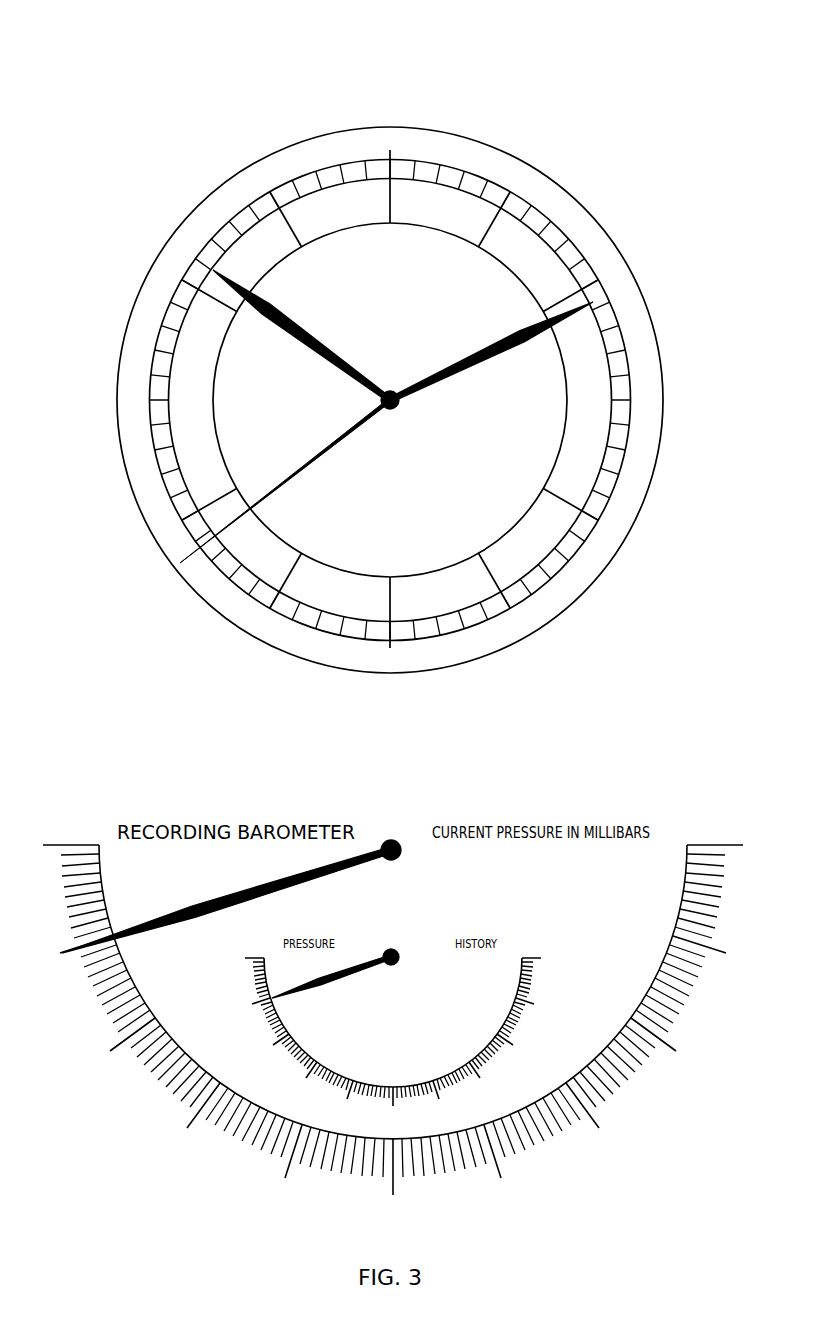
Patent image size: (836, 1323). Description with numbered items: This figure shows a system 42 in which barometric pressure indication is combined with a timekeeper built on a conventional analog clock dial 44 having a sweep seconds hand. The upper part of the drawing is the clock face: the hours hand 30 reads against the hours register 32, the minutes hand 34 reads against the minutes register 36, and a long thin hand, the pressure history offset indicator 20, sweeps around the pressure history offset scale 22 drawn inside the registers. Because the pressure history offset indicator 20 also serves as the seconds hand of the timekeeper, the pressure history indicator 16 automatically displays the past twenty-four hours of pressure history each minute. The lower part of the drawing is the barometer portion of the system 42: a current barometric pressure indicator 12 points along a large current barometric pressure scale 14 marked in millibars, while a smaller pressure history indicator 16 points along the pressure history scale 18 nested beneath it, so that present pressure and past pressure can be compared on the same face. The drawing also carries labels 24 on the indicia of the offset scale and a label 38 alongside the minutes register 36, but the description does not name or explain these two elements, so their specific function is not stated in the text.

The system 42 is at (58, 56).
The conventional analog clock dial 44 is at (441, 128).
The hours register 32 is at (381, 139).
The minutes register 36 is at (440, 400).
The minute tick marks 38 is at (618, 483).
The pressure history offset scale 22 is at (537, 535).
The pressure change indicia 24 is at (306, 224).
The hours hand 30 is at (323, 364).
The minutes hand 34 is at (467, 353).
The pressure history offset indicator 20 is at (303, 467).
The current barometric pressure indicator 12 is at (223, 890).
The current barometric pressure scale 14 is at (672, 1047).
The pressure history indicator 16 is at (352, 985).
The pressure history scale 18 is at (530, 952).